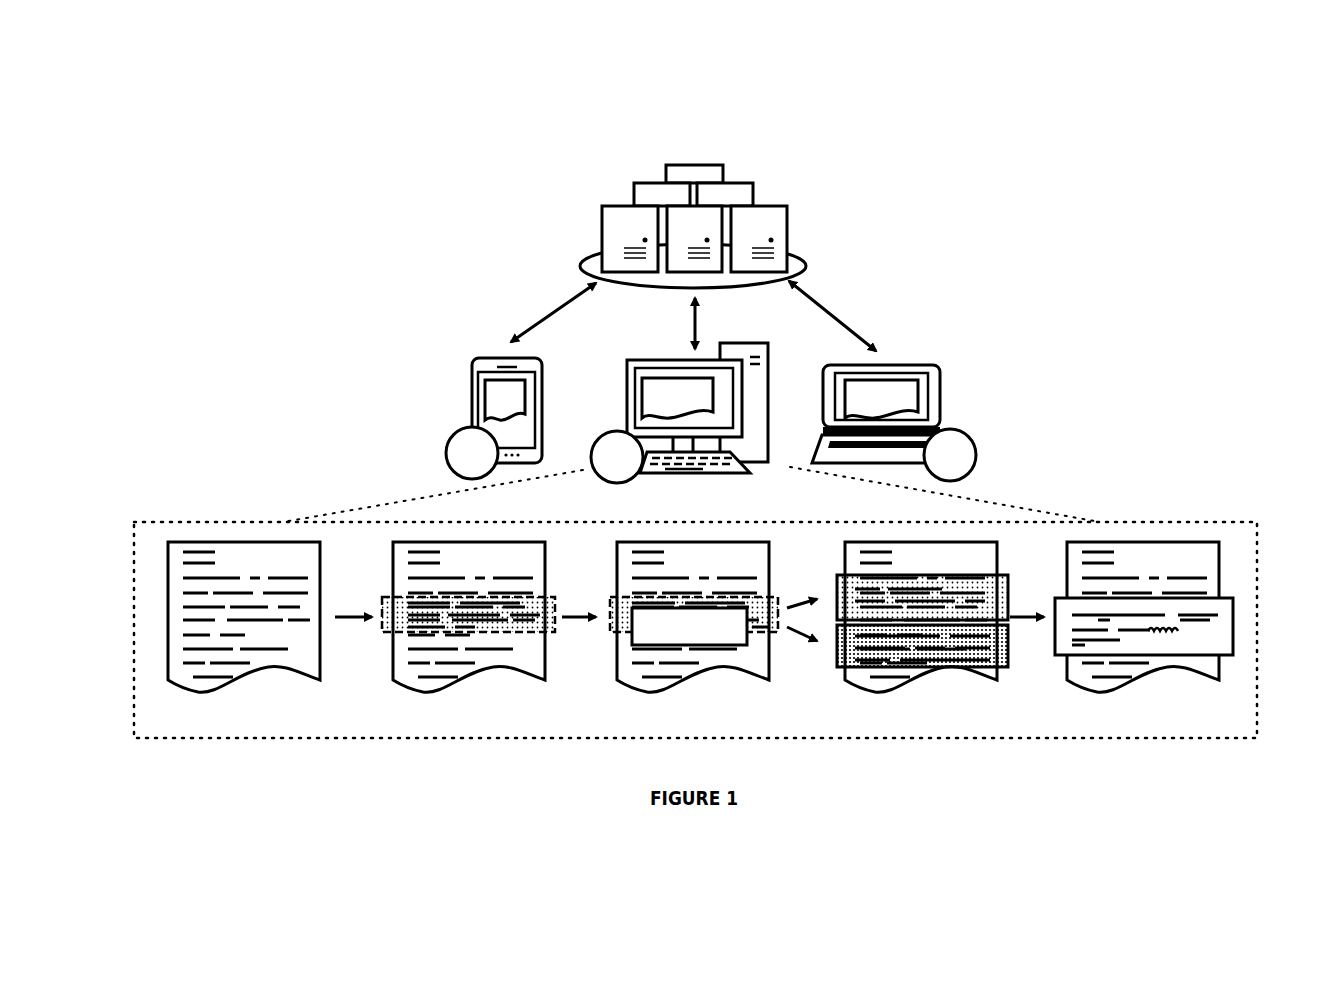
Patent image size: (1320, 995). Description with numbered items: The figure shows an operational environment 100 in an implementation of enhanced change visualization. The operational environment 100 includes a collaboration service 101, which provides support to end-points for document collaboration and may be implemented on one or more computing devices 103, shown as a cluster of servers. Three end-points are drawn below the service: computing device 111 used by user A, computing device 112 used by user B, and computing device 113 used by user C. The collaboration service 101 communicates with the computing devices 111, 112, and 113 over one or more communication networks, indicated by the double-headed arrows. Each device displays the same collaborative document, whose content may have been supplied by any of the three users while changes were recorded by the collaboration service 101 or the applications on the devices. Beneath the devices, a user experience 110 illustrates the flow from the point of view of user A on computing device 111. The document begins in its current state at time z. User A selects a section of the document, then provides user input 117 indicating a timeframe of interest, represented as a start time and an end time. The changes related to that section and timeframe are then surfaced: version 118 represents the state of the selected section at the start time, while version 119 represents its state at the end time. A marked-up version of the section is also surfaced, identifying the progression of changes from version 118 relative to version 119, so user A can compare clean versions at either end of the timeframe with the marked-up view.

The operational environment 100 is at (275, 125).
The collaboration service 101 is at (598, 210).
The computing devices 103 is at (707, 235).
The user experience 110 is at (348, 726).
The computing device 111 is at (692, 416).
The computing device 112 is at (515, 418).
The computing device 113 is at (899, 423).
The user input 117 is at (747, 646).
The version 118 is at (1008, 585).
The version 119 is at (1008, 662).